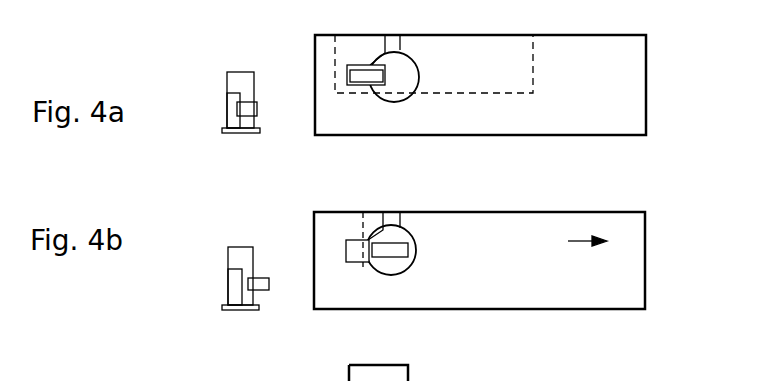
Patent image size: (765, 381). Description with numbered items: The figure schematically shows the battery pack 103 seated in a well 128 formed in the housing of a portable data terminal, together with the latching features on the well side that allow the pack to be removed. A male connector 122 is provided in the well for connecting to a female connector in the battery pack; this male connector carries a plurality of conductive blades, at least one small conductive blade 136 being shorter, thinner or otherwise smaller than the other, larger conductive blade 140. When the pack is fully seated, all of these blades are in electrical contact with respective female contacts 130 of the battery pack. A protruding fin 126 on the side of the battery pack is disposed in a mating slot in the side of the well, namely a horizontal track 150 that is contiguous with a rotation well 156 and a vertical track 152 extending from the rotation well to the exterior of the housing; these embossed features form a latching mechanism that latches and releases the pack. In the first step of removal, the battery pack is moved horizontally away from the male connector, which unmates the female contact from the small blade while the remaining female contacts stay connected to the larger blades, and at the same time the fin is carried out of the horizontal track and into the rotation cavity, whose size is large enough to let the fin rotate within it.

In FIG. 4A, the battery pack 103 is at (535, 55).
In FIG. 4B, the battery pack 103 is at (562, 262).
In FIG. 4A, the male connector 122 is at (247, 158).
In FIG. 4B, the male connector 122 is at (249, 334).
In FIG. 4A, the protruding fin 126 is at (367, 75).
In FIG. 4B, the protruding fin 126 is at (397, 250).
In FIG. 4A, the well 128 is at (646, 88).
In FIG. 4B, the well 128 is at (646, 242).
In FIG. 4A, the female contacts 130 is at (249, 109).
In FIG. 4B, the female contacts 130 is at (263, 280).
In FIG. 4A, the small conductive blade 136 is at (234, 97).
In FIG. 4B, the small conductive blade 136 is at (233, 282).
In FIG. 4A, the larger conductive blade 140 is at (240, 77).
In FIG. 4B, the larger conductive blade 140 is at (233, 258).
In FIG. 4A, the horizontal track 150 is at (358, 63).
In FIG. 4B, the horizontal track 150 is at (350, 242).
In FIG. 4A, the vertical track 152 is at (395, 48).
In FIG. 4B, the vertical track 152 is at (393, 220).
In FIG. 4A, the rotation well 156 is at (405, 72).
In FIG. 4B, the rotation well 156 is at (392, 262).